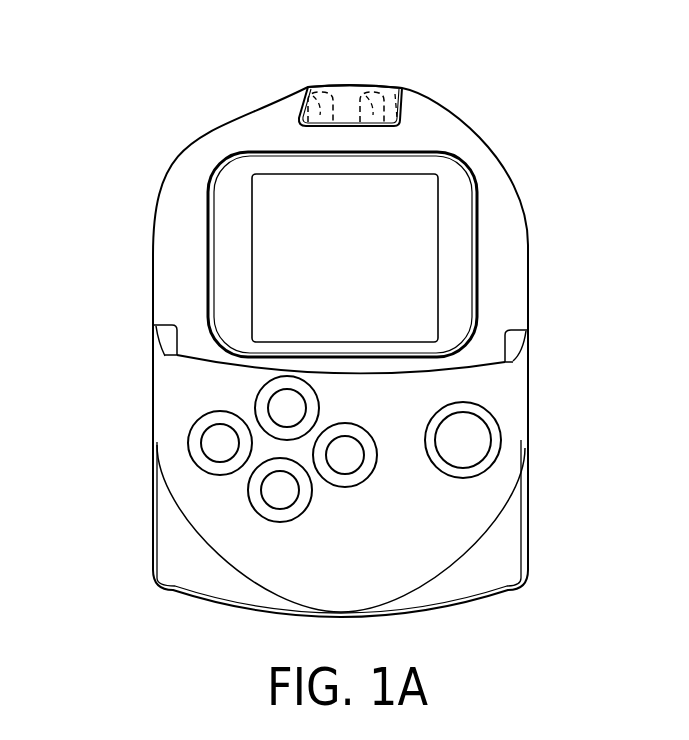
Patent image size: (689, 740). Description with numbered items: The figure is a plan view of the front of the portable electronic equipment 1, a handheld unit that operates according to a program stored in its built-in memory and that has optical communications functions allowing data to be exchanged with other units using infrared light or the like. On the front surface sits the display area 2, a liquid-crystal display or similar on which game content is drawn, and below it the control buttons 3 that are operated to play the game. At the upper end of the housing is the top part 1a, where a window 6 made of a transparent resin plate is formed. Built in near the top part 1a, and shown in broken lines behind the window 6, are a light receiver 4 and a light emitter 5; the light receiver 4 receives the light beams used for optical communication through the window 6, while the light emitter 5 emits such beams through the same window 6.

The portable electronic equipment 1 is at (490, 135).
The top part 1a is at (350, 87).
The display area 2 is at (413, 253).
The control buttons 3 is at (217, 443).
The light receiver 4 is at (308, 85).
The light emitter 5 is at (388, 82).
The window 6 is at (402, 88).